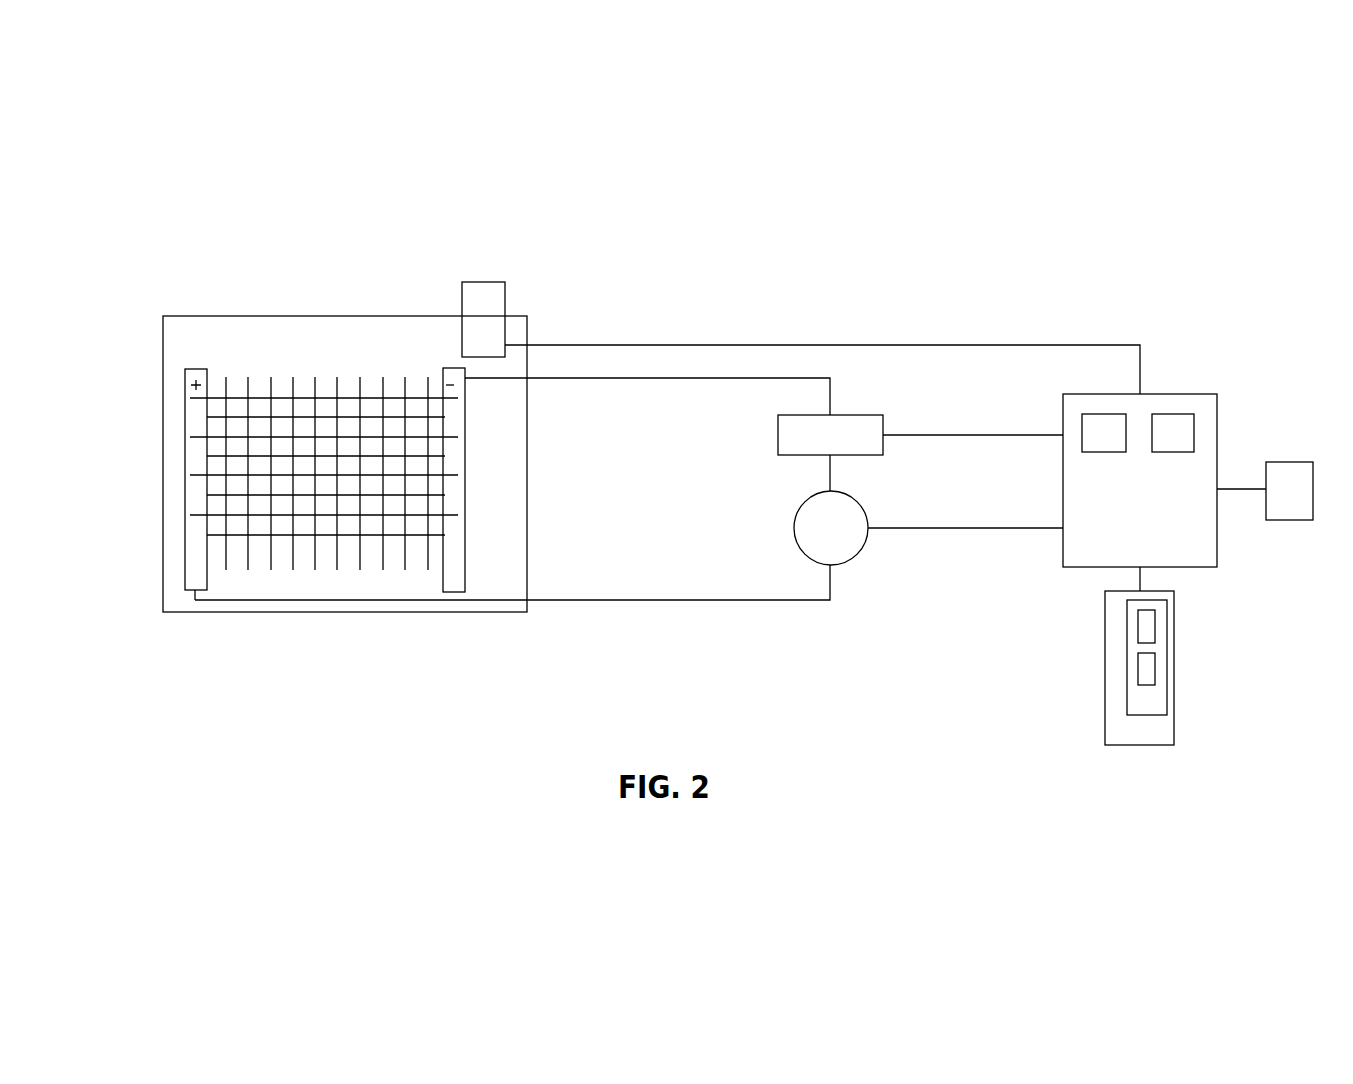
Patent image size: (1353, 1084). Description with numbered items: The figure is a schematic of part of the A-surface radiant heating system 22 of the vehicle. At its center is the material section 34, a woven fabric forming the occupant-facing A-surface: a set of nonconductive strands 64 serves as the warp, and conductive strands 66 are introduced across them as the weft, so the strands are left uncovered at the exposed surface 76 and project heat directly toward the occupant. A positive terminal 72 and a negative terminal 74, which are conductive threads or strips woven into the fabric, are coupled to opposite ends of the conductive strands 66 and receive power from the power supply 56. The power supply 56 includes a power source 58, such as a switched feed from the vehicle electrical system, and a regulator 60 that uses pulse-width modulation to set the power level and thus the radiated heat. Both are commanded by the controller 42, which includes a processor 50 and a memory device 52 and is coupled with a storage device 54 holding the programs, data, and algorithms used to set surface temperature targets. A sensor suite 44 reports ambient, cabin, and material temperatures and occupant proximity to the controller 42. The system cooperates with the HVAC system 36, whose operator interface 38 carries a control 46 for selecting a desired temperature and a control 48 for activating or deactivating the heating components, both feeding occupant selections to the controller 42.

The A-surface radiant heating system 22 is at (252, 290).
The material section 34 is at (311, 470).
The positive terminal 72 is at (190, 370).
The negative terminal 74 is at (452, 372).
The exposed surface 76 is at (262, 467).
The nonconductive strands 64 is at (313, 555).
The conductive strands 66 is at (438, 517).
The sensor suite 44 is at (495, 285).
The power supply 56 is at (753, 485).
The power source 58 is at (773, 432).
The regulator 60 is at (852, 552).
The controller 42 is at (1139, 432).
The processor 50 is at (1107, 413).
The memory device 52 is at (1195, 433).
The storage device 54 is at (1298, 520).
The HVAC system 36 is at (1126, 673).
The operator interface 38 is at (1198, 675).
The control 46 is at (1157, 627).
The control 48 is at (1157, 668).